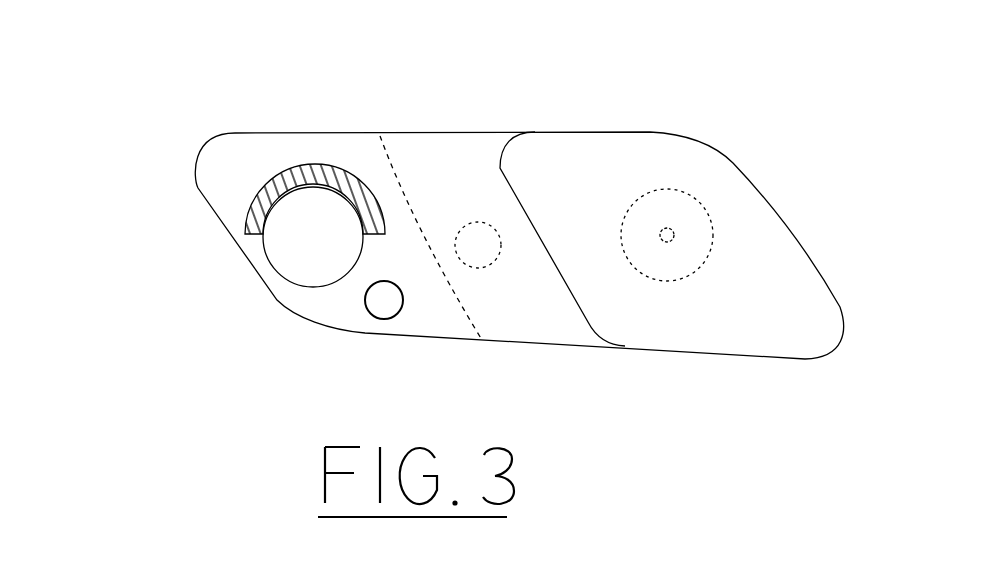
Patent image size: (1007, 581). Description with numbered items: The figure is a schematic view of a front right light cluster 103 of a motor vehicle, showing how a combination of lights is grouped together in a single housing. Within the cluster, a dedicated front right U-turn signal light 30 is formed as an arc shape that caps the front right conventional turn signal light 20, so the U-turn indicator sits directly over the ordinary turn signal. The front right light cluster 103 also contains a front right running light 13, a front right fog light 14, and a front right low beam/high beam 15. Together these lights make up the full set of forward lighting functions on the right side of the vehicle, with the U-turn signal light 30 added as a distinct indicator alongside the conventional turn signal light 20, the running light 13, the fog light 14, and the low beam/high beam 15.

The front right light cluster 103 is at (395, 73).
The front right U-turn signal light 30 is at (229, 143).
The front right conventional turn signal light 20 is at (209, 259).
The front right fog light 14 is at (291, 349).
The front right running light 13 is at (541, 322).
The front right low beam/high beam 15 is at (727, 165).